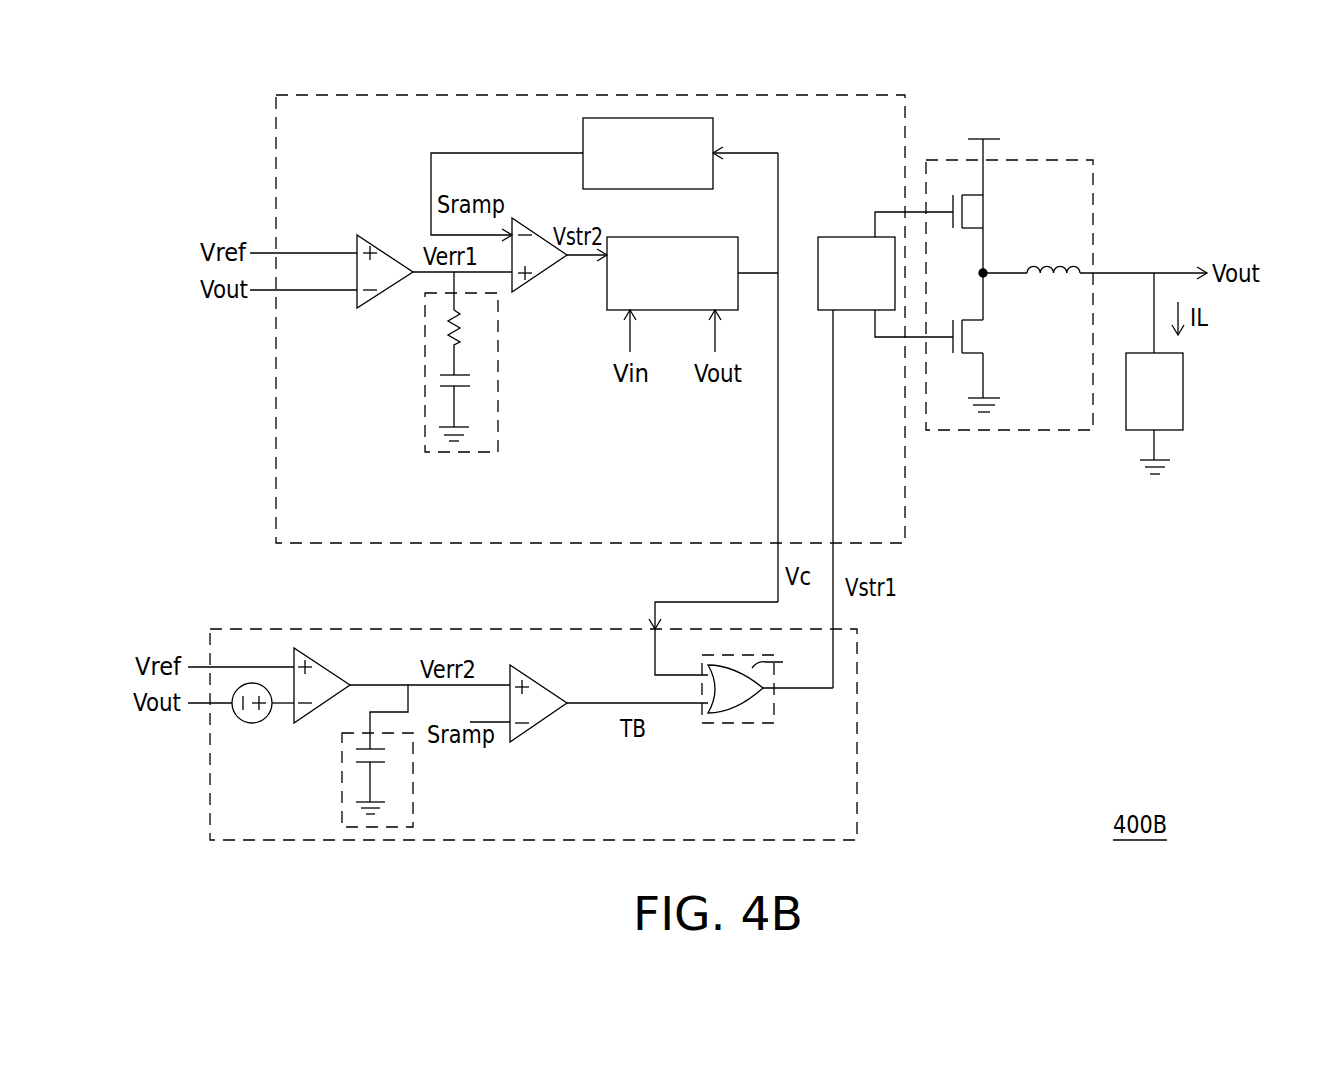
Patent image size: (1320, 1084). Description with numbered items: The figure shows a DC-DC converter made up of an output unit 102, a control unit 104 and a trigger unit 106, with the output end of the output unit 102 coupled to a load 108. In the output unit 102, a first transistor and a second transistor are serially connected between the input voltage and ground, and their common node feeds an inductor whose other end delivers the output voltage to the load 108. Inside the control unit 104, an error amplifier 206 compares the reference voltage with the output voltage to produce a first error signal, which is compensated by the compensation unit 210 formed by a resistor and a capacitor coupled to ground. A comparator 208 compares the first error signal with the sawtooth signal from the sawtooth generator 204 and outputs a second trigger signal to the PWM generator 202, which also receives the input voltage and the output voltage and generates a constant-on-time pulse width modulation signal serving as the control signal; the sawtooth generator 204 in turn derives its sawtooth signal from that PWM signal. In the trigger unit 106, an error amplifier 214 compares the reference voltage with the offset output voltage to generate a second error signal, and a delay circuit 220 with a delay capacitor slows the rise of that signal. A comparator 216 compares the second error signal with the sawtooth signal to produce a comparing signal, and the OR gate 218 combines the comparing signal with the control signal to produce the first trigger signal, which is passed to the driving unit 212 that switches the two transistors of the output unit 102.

The output unit 102 is at (1043, 157).
The control unit 104 is at (905, 498).
The trigger unit 106 is at (857, 703).
The load 108 is at (1183, 390).
The PWM generator 202 is at (685, 237).
The sawtooth generator 204 is at (713, 135).
The error amplifier 206 is at (385, 235).
The comparator 208 is at (545, 232).
The compensation unit 210 is at (468, 452).
The driving unit 212 is at (838, 237).
The error amplifier 214 is at (320, 660).
The comparator 216 is at (540, 720).
The OR gate 218 is at (745, 725).
The delay circuit 220 is at (342, 787).